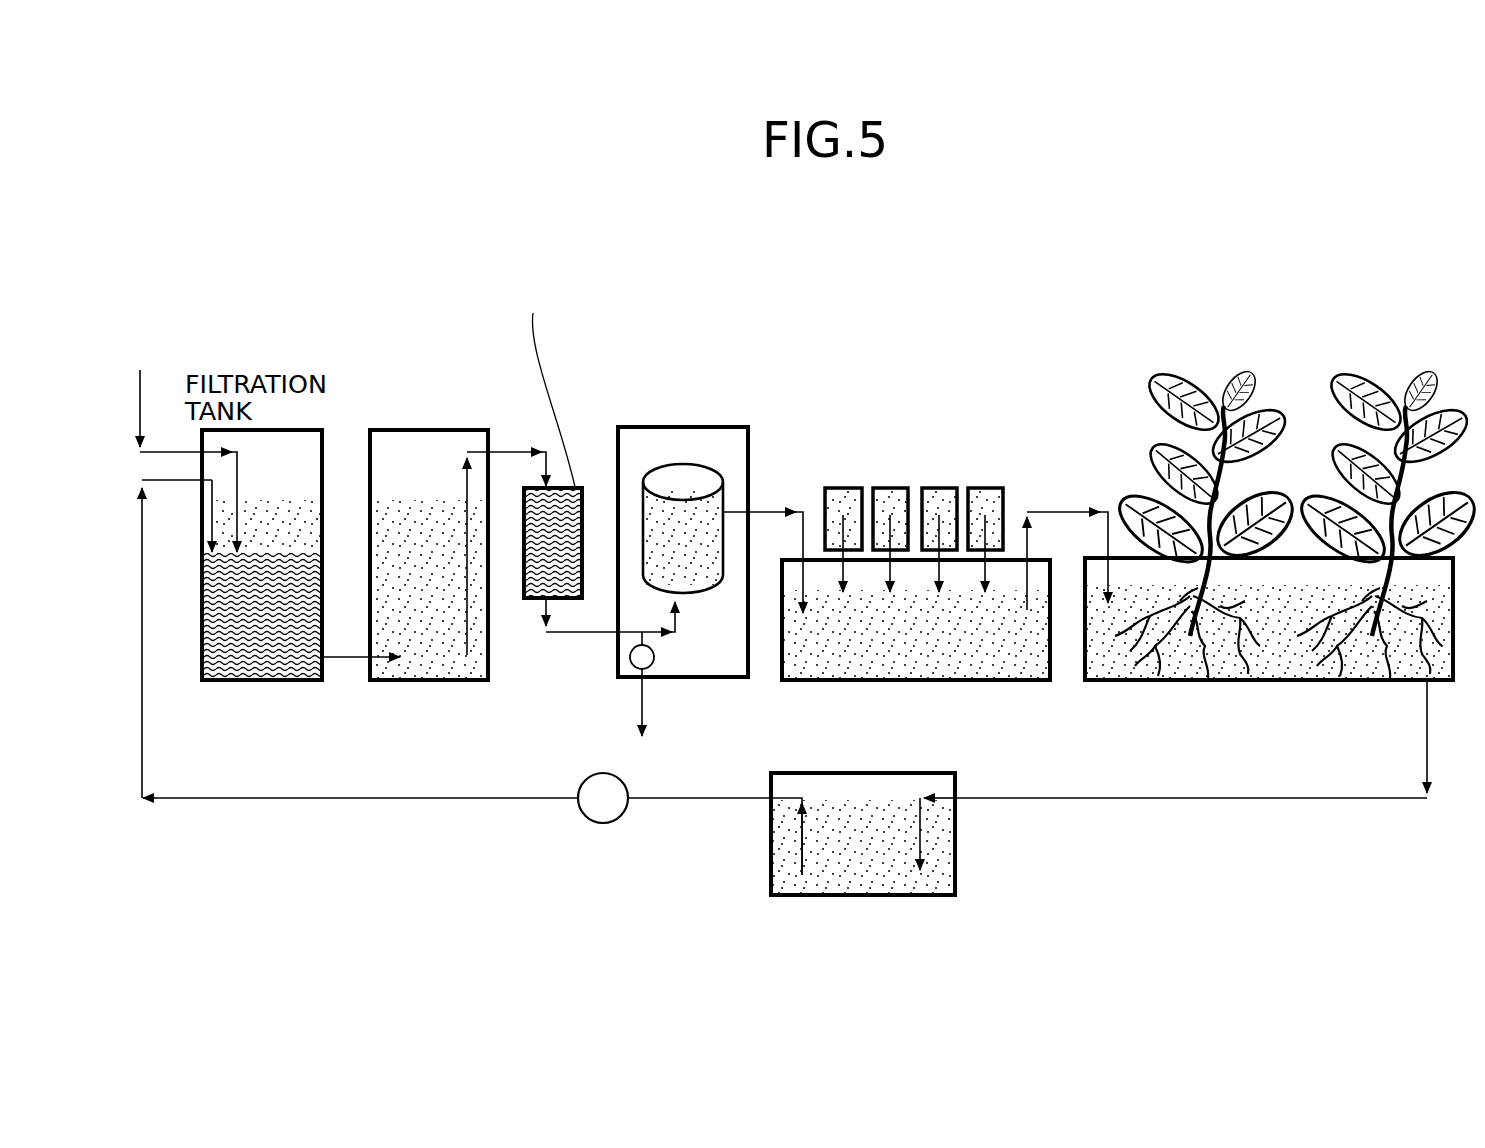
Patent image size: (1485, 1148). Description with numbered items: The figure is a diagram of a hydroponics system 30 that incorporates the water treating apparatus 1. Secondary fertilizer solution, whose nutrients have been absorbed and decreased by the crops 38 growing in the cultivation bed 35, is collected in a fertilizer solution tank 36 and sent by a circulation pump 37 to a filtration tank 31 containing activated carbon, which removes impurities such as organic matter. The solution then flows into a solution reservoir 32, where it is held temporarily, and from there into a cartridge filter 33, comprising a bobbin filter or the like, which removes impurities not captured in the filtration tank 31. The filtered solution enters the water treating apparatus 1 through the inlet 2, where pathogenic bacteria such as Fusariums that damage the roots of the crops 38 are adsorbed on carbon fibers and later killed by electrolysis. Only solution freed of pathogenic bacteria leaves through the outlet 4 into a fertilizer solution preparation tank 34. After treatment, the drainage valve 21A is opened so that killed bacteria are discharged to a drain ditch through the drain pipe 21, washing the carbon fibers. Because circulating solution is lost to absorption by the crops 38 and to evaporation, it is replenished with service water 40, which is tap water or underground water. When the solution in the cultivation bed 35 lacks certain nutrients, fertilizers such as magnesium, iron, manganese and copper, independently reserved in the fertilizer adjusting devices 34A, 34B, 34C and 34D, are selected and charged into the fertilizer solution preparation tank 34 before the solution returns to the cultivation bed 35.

The service water 40 is at (143, 300).
The filtration tank 31 is at (237, 682).
The solution reservoir 32 is at (402, 682).
The cartridge filter 33 is at (532, 602).
The water treating apparatus 1 is at (630, 427).
The inlet 2 is at (678, 625).
The outlet 4 is at (737, 510).
The drain pipe 21 is at (638, 636).
The drainage valve 21A is at (628, 668).
The hydroponics system 30 is at (1028, 370).
The fertilizer solution preparation tank 34 is at (917, 560).
The fertilizer adjusting device 34A is at (832, 487).
The fertilizer adjusting device 34B is at (883, 487).
The fertilizer adjusting device 34C is at (930, 487).
The fertilizer adjusting device 34D is at (990, 487).
The cultivation bed 35 is at (1133, 682).
The fertilizer solution tank 36 is at (955, 843).
The circulation pump 37 is at (610, 821).
The crops 38 is at (1192, 378).